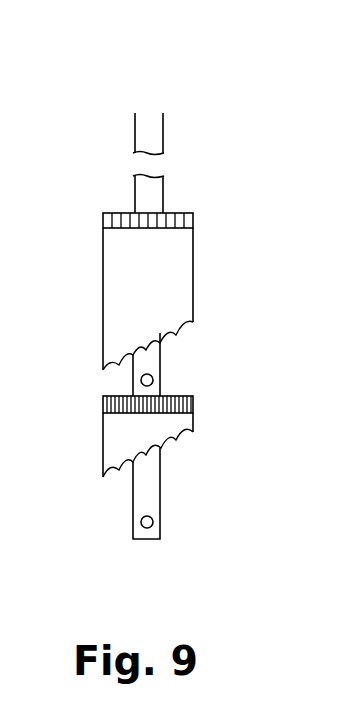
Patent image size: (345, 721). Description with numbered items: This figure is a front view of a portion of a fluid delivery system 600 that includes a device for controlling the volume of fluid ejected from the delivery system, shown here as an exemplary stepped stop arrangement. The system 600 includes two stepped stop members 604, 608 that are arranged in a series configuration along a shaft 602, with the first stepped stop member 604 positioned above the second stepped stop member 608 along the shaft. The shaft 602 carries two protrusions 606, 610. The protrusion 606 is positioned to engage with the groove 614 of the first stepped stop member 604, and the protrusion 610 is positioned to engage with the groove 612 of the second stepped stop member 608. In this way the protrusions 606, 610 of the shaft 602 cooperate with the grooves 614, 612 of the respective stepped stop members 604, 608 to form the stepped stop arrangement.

The system 600 is at (207, 80).
The shaft 602 is at (153, 193).
The stepped stop member 604 is at (173, 283).
The protrusion 606 is at (153, 379).
The stepped stop member 608 is at (160, 429).
The protrusion 610 is at (155, 521).
The groove 612 is at (130, 462).
The groove 614 is at (138, 363).